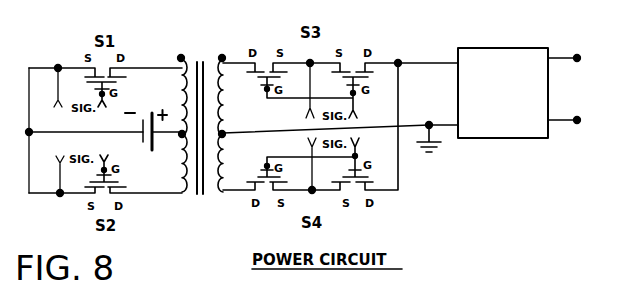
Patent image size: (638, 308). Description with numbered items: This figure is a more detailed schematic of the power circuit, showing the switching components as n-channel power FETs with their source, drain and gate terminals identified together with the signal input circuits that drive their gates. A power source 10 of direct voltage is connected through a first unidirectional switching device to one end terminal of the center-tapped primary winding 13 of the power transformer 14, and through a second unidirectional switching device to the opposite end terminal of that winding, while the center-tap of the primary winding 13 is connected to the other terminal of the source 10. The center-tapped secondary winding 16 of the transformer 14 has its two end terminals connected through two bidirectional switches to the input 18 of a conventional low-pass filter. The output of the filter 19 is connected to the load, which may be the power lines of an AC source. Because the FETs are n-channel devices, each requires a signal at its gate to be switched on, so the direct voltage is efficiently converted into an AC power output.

The power source 10 is at (141, 135).
The center-tapped primary winding 13 is at (182, 82).
The power transformer 14 is at (199, 205).
The center-tapped secondary winding 16 is at (224, 98).
The input of low-pass filter 18 is at (457, 62).
The output of filter 19 is at (548, 58).